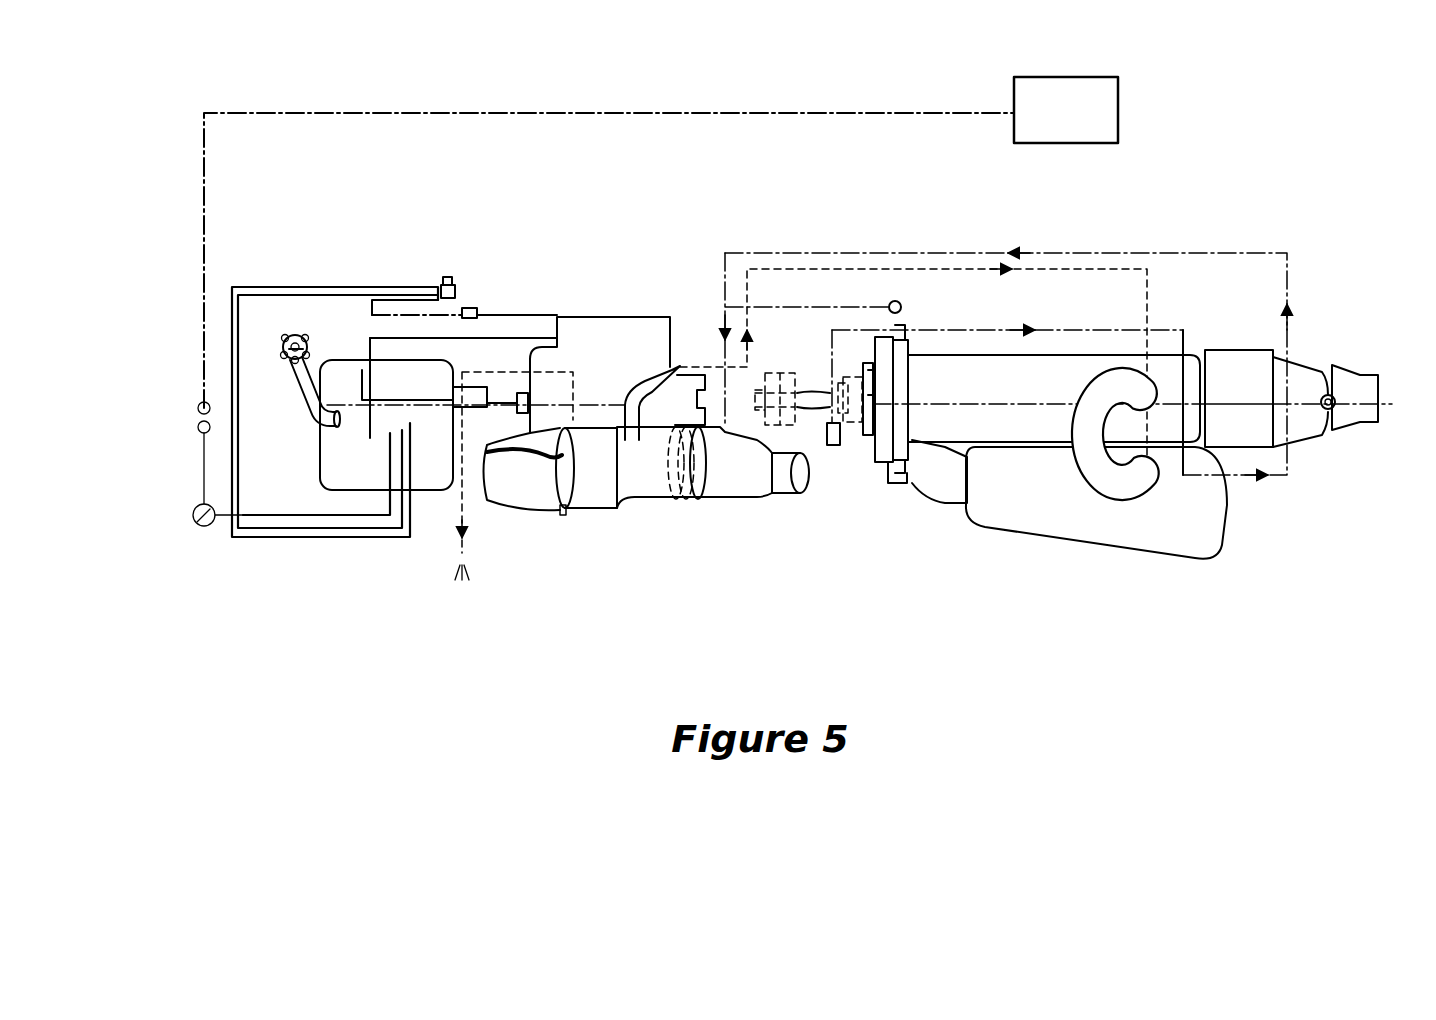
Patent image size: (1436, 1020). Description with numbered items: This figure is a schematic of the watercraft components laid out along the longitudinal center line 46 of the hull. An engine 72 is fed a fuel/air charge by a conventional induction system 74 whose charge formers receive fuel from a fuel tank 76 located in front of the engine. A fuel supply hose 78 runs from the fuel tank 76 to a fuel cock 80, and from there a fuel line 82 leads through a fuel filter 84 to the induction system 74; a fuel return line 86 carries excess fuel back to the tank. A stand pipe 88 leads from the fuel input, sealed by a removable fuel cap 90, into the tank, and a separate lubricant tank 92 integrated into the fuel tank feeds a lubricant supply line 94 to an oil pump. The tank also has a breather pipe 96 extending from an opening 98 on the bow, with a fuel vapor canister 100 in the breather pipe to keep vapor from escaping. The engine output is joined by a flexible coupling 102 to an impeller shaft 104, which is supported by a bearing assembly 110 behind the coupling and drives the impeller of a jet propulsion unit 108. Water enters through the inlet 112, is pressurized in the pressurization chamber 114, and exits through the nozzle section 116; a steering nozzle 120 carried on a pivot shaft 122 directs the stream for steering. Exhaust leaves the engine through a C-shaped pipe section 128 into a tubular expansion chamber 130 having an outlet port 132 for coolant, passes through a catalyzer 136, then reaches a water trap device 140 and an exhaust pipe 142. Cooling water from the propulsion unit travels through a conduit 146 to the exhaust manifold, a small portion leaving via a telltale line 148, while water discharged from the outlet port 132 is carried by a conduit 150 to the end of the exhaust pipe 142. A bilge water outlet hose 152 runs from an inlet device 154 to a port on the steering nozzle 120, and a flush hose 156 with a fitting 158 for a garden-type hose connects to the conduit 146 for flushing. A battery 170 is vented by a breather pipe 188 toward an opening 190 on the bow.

The longitudinal center line 46 is at (360, 412).
The engine 72 is at (639, 380).
The induction system 74 is at (582, 313).
The fuel tank 76 is at (443, 500).
The fuel supply hose 78 is at (280, 296).
The fuel cock 80 is at (452, 272).
The fuel line 82 is at (538, 315).
The fuel filter 84 is at (518, 333).
The fuel return line 86 is at (470, 302).
The stand pipe 88 is at (302, 390).
The fuel cap 90 is at (305, 338).
The lubricant tank 92 is at (410, 375).
The lubricant supply line 94 is at (485, 408).
The breather pipe 96 is at (290, 508).
The opening 98 is at (198, 429).
The fuel vapor canister 100 is at (197, 527).
The flexible coupling 102 is at (780, 375).
The impeller shaft 104 is at (820, 410).
The jet propulsion unit 108 is at (1318, 345).
The bearing assembly 110 is at (850, 425).
The inlet 112 is at (985, 372).
The pressurization chamber 114 is at (1238, 353).
The nozzle section 116 is at (1300, 410).
The steering nozzle 120 is at (1365, 380).
The pivot shaft 122 is at (1333, 410).
The C-shaped pipe section 128 is at (532, 498).
The expansion chamber 130 is at (665, 490).
The outlet port 132 is at (640, 497).
The catalyzer 136 is at (706, 500).
The water trap device 140 is at (1020, 515).
The exhaust pipe 142 is at (1094, 474).
The conduit 146 is at (1228, 250).
The telltale line 148 is at (475, 505).
The conduit 150 is at (661, 368).
The bilge water outlet hose 152 is at (1060, 326).
The inlet device 154 is at (833, 447).
The flush hose 156 is at (794, 300).
The fitting 158 is at (900, 297).
The battery 170 is at (1122, 103).
The breather pipe 188 is at (476, 108).
The opening 190 is at (197, 406).